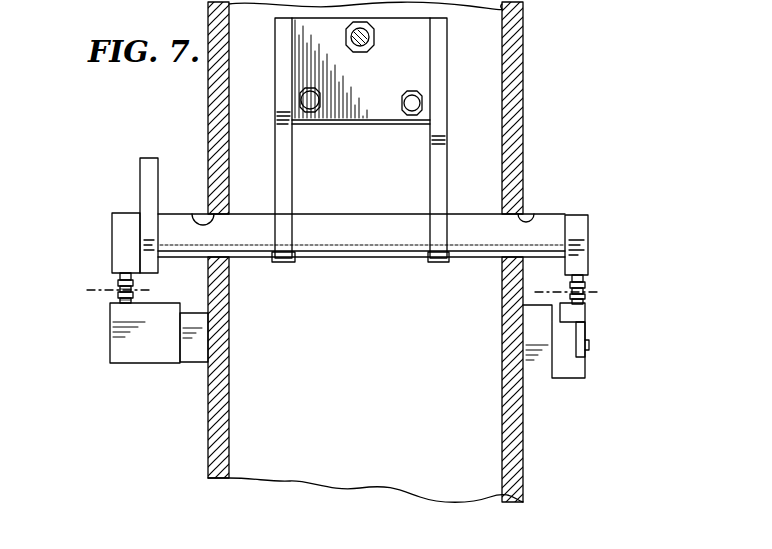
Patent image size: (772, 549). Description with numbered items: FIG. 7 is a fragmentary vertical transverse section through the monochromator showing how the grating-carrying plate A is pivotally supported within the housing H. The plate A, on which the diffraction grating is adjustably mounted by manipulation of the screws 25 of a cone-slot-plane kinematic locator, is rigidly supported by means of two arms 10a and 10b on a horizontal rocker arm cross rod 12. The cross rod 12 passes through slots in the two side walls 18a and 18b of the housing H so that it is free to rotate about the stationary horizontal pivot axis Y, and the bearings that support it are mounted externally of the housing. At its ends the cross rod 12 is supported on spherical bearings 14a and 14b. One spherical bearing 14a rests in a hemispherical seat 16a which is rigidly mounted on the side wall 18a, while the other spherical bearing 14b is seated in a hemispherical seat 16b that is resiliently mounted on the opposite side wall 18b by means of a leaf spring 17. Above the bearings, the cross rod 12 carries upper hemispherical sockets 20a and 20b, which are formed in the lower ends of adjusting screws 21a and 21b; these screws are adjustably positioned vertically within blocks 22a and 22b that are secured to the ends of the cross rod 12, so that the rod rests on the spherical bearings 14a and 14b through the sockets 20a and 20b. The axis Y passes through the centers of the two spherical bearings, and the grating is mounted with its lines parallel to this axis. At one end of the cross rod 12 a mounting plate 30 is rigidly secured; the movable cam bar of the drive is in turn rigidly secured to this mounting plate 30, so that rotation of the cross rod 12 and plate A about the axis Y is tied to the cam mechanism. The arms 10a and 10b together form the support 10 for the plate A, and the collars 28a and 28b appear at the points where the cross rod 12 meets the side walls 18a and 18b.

The arms 10 is at (360, 140).
The arm 10a is at (275, 167).
The arm 10b is at (446, 196).
The rocker arm cross rod 12 is at (386, 258).
The spherical bearing 14a is at (118, 293).
The spherical bearing 14b is at (584, 298).
The hemispherical seat 16a is at (118, 302).
The hemispherical seat 16b is at (585, 308).
The leaf spring 17 is at (586, 338).
The side wall 18a is at (210, 440).
The side wall 18b is at (522, 438).
The upper hemispherical socket 20a is at (118, 289).
The upper hemispherical socket 20b is at (584, 290).
The adjusting screw 21a is at (124, 272).
The adjusting screw 21b is at (584, 278).
The block 22a is at (116, 218).
The block 22b is at (589, 232).
The screws 25 is at (316, 92).
The collar 28a is at (203, 214).
The collar 28b is at (527, 215).
The mounting plate 30 is at (140, 166).
The plate A is at (360, 140).
The housing H is at (514, 163).
The horizontal axis Y is at (346, 295).